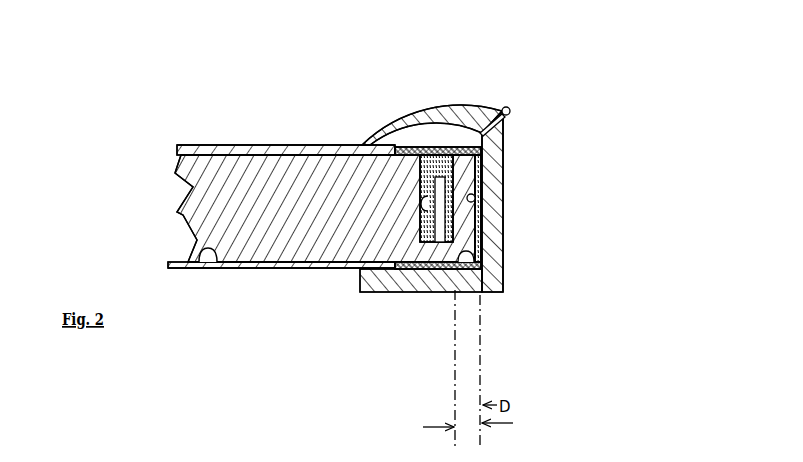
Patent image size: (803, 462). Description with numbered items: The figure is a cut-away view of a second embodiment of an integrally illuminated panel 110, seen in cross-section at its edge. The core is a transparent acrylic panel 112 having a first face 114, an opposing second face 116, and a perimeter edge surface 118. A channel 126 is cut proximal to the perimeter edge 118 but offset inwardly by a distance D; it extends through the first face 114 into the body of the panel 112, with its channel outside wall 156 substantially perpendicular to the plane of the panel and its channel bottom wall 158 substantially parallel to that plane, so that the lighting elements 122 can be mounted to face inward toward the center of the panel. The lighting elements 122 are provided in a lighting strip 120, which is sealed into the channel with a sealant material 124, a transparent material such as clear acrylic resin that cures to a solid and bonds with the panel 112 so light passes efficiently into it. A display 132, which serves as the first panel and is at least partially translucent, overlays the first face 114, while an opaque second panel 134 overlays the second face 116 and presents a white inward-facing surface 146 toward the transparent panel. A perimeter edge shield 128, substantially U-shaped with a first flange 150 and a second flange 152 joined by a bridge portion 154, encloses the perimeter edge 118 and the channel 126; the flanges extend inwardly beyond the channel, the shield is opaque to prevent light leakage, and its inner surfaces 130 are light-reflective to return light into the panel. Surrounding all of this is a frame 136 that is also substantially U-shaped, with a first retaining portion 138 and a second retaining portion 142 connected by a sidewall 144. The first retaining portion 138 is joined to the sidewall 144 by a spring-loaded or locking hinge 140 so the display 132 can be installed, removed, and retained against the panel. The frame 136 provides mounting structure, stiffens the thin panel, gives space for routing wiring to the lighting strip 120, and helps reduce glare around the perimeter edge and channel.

The integrally illuminated panel 110 is at (190, 117).
The transparent acrylic panel 112 is at (178, 211).
The first face 114 is at (247, 150).
The display 132 is at (291, 150).
The lighting elements 122 is at (343, 152).
The second panel 134 is at (230, 267).
The second face 116 is at (308, 266).
The inward-facing surface 146 is at (197, 268).
The lighting strip 120 is at (427, 148).
The channel 126 is at (437, 152).
The inner surfaces 130 is at (420, 215).
The sealant material 124 is at (400, 152).
The first flange 150 is at (449, 150).
The channel bottom wall 158 is at (400, 264).
The second flange 152 is at (447, 270).
The sidewall 144 is at (488, 252).
The second retaining portion 142 is at (413, 289).
The first retaining portion 138 is at (452, 112).
The frame 136 is at (505, 148).
The perimeter edge surface 118 is at (487, 209).
The bridge portion 154 is at (487, 229).
The channel outside wall 156 is at (478, 179).
The perimeter edge shield 128 is at (500, 257).
The hinge 140 is at (510, 109).